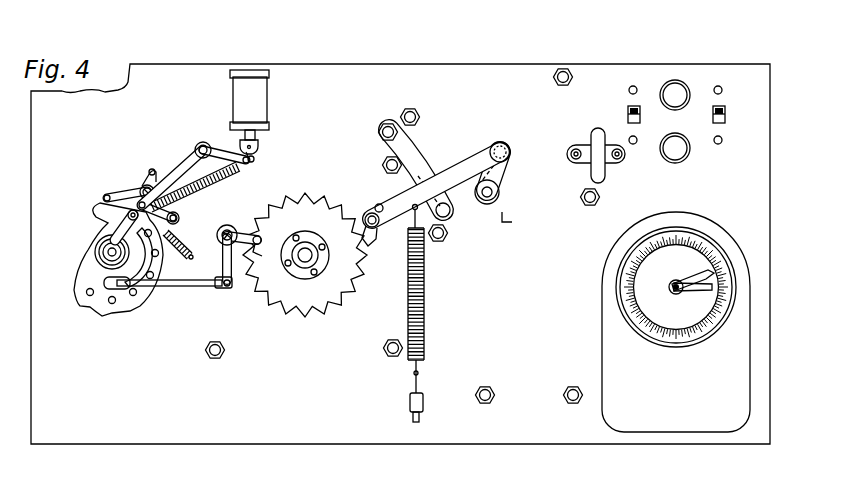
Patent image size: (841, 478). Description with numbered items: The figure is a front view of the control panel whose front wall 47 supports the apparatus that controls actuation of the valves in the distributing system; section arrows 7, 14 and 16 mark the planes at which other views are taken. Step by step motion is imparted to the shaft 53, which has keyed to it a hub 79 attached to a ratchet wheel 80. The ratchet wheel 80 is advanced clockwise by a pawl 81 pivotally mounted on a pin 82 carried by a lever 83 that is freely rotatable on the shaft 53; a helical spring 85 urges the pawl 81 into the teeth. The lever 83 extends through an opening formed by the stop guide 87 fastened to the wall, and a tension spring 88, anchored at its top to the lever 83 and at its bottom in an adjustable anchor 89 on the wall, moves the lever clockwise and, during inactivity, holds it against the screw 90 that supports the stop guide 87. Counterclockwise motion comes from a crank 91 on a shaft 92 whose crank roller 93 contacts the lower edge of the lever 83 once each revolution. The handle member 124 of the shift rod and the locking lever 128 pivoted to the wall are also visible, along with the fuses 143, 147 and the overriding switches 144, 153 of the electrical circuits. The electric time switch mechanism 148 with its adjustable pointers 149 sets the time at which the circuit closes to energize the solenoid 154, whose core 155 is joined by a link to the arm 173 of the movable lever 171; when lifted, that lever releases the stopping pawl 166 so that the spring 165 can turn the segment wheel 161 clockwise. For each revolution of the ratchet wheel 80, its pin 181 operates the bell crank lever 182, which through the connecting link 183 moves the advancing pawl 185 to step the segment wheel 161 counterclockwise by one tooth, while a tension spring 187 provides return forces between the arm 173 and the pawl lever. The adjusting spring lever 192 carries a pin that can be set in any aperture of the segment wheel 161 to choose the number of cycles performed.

The front wall 47 is at (375, 73).
The section line 7 is at (274, 40).
The section line 14 is at (474, 40).
The section line 16 is at (573, 101).
The overriding switch 153 is at (640, 106).
The overriding switch 144 is at (726, 112).
The fuse 143 is at (677, 83).
The fuse 147 is at (686, 155).
The locking lever 128 is at (620, 163).
The handle member 124 is at (600, 173).
The electric time switch mechanism 148 is at (683, 318).
The adjustable pointers 149 is at (717, 281).
The hub 79 is at (305, 241).
The ratchet wheel 80 is at (310, 195).
The shaft 53 is at (308, 241).
The stop guide 87 is at (426, 187).
The screw 90 is at (448, 216).
The crank 91 is at (510, 177).
The lever 83 is at (390, 231).
The shaft 92 is at (503, 141).
The crank roller 93 is at (486, 204).
The pin 82 is at (367, 214).
The helical spring 85 is at (377, 205).
The pawl 81 is at (372, 247).
The tension spring 88 is at (424, 294).
The adjustable anchor 89 is at (418, 380).
The segment wheel 161 is at (127, 304).
The connecting link 183 is at (183, 291).
The bell crank lever 182 is at (236, 223).
The pin 181 is at (256, 247).
The adjusting spring lever 192 is at (117, 231).
The advancing pawl 185 is at (132, 186).
The stopping pawl 166 is at (184, 223).
The spring 165 is at (178, 244).
The tension spring 187 is at (210, 180).
The movable lever 171 is at (183, 160).
The solenoid 154 is at (231, 97).
The core 155 is at (260, 142).
The arm 173 is at (254, 160).